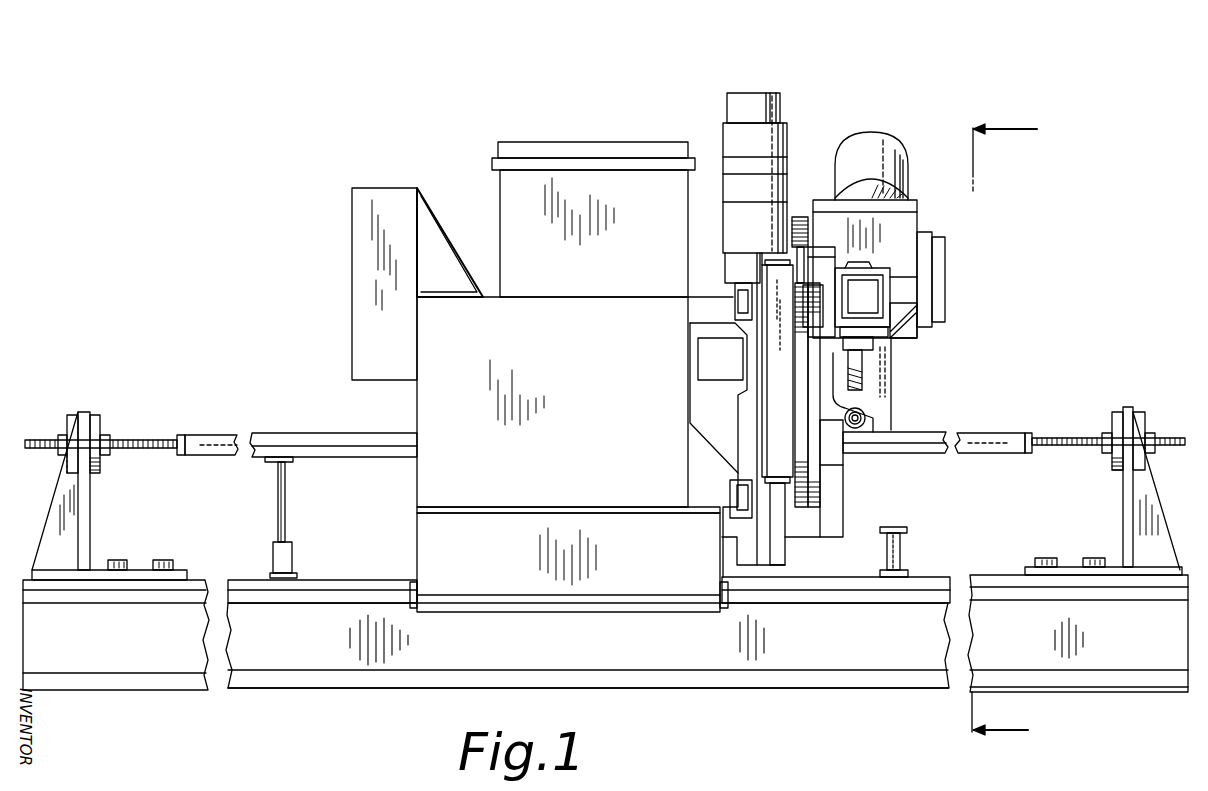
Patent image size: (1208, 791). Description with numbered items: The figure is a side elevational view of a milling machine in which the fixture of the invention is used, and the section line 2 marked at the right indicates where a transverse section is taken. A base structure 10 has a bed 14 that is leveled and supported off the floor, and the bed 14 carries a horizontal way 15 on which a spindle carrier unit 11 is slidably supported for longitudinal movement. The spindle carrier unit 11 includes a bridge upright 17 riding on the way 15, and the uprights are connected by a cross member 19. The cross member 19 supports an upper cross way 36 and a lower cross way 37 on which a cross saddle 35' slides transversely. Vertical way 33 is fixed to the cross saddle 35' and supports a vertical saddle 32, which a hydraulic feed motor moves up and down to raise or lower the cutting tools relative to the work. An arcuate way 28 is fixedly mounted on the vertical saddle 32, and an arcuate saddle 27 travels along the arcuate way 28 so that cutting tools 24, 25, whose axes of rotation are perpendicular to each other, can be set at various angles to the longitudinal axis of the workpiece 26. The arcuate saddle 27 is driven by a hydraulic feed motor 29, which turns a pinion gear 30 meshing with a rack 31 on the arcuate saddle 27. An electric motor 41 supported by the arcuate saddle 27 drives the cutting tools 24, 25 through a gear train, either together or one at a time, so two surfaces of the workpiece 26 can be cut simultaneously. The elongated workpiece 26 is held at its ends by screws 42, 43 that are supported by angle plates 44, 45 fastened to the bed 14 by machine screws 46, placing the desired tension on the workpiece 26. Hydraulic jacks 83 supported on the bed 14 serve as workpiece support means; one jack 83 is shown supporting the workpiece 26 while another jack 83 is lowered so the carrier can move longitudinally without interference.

The section line 2- 2 is at (1004, 428).
The base structure 10 is at (315, 690).
The spindle carrier unit 11 is at (414, 395).
The bed 14 is at (417, 692).
The way 15 is at (335, 598).
The bridge upright 17 is at (518, 600).
The cross member 19 is at (530, 305).
The cutting tool 24 is at (862, 378).
The cutting tool 25 is at (866, 418).
The workpiece 26 is at (978, 450).
The arcuate saddle 27 is at (826, 240).
The arcuate way 28 is at (815, 492).
The hydraulic feed motor 29 is at (750, 100).
The pinion gear 30 is at (790, 216).
The rack 31 is at (795, 256).
The vertical saddle 32 is at (773, 403).
The vertical way 33 is at (780, 556).
The cross saddle 35' is at (715, 450).
The upper cross way 36 is at (735, 306).
The lower cross way 37 is at (735, 493).
The electric motor 41 is at (873, 136).
The screw 42 is at (32, 440).
The screw 43 is at (1165, 447).
The angle plate 44 is at (88, 500).
The angle plate 45 is at (1125, 507).
The machine screws 46 is at (118, 560).
The hydraulic jack 83 is at (290, 558).